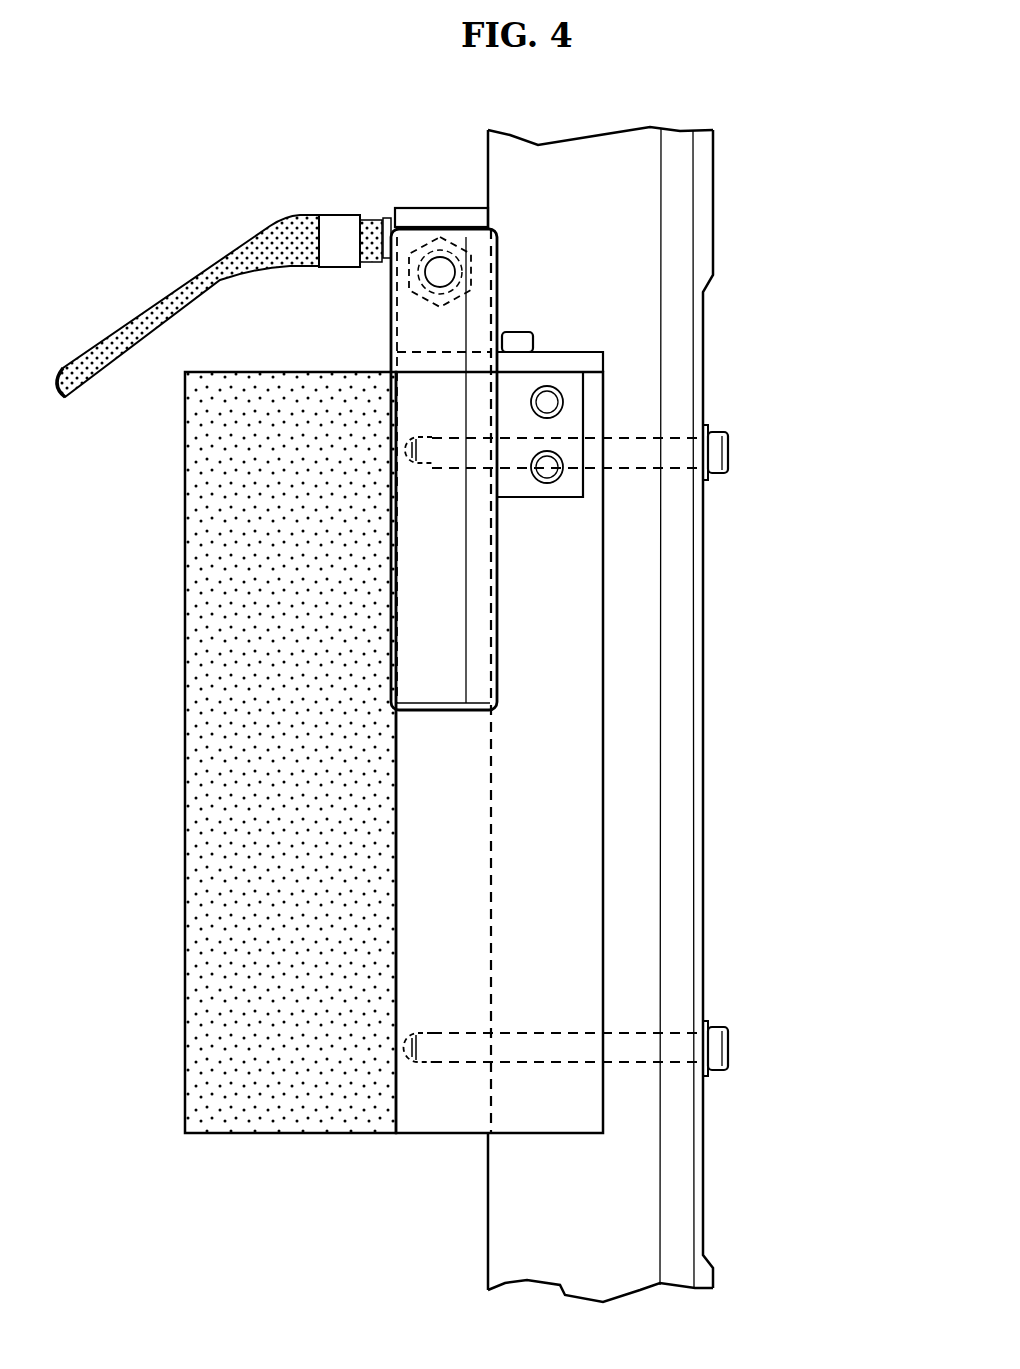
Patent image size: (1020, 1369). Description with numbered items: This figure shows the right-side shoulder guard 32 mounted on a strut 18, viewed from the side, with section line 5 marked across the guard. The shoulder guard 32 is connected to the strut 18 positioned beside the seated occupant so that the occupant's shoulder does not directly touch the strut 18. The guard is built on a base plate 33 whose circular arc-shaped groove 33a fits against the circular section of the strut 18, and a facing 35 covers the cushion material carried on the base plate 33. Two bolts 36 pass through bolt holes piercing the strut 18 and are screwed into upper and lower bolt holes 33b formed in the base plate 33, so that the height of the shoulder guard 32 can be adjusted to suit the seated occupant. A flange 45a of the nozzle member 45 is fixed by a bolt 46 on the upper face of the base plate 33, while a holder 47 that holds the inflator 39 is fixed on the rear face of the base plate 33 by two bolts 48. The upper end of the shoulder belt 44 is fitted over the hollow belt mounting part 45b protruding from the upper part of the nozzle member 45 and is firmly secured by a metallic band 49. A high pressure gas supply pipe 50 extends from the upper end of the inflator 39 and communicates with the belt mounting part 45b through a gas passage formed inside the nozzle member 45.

The section line 5- 5 is at (174, 725).
The strut 18 is at (683, 818).
The shoulder guard 32 is at (163, 912).
The base plate 33 is at (582, 681).
The circular arc-shaped groove 33a is at (488, 862).
The bolt hole 33b is at (463, 432).
The facing 35 is at (195, 637).
The bolt 36 is at (723, 460).
The inflator 39 is at (431, 683).
The shoulder belt 44 is at (217, 273).
The nozzle member 45 is at (400, 448).
The flange 45a is at (572, 432).
The belt mounting part 45b is at (387, 216).
The bolt 46 is at (515, 337).
The holder 47 is at (440, 488).
The bolt 48 is at (553, 403).
The metallic band 49 is at (340, 233).
The high pressure gas supply pipe 50 is at (425, 312).